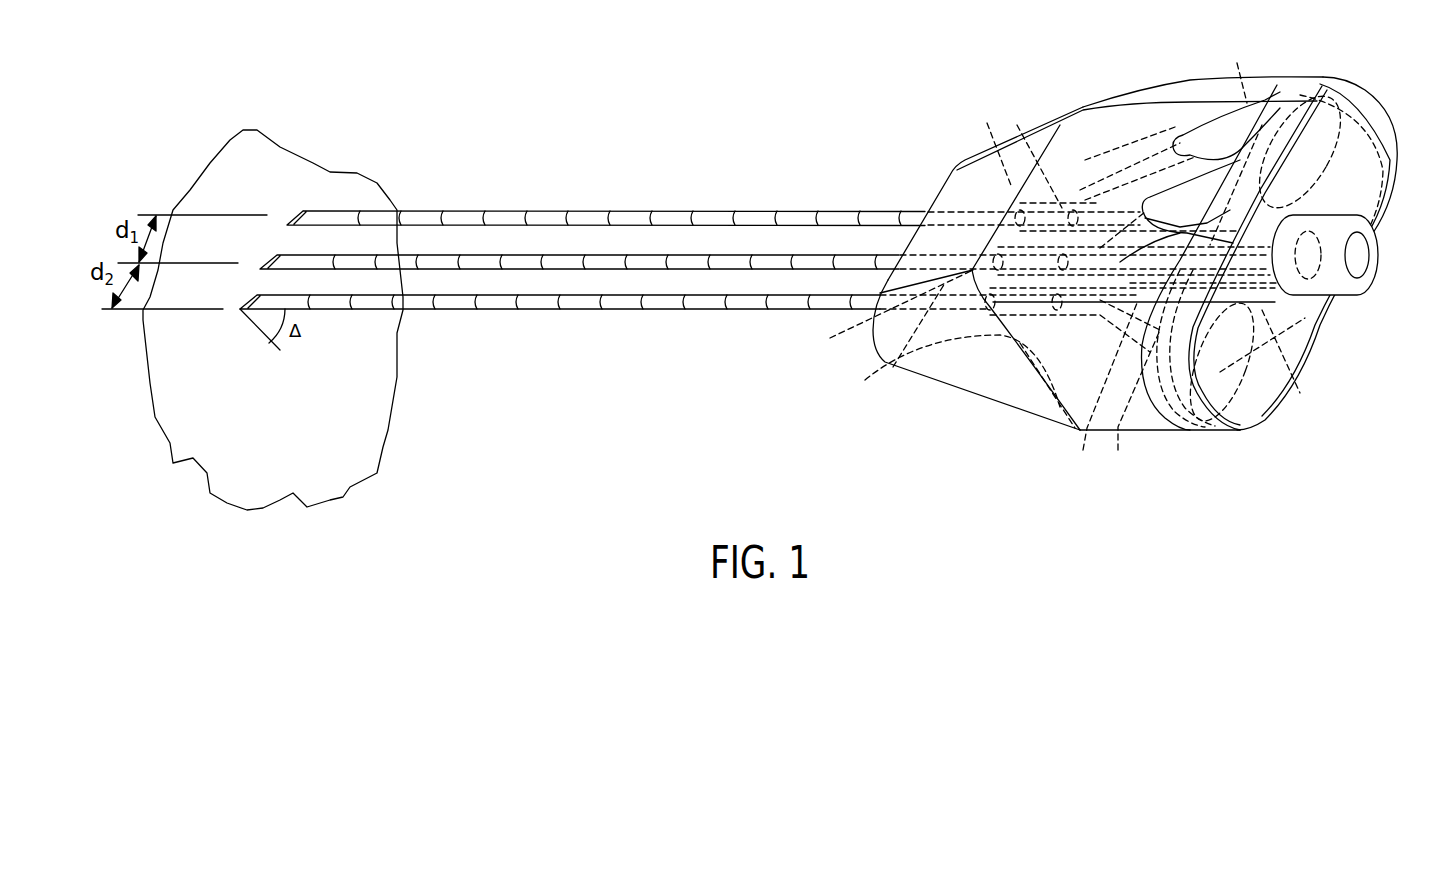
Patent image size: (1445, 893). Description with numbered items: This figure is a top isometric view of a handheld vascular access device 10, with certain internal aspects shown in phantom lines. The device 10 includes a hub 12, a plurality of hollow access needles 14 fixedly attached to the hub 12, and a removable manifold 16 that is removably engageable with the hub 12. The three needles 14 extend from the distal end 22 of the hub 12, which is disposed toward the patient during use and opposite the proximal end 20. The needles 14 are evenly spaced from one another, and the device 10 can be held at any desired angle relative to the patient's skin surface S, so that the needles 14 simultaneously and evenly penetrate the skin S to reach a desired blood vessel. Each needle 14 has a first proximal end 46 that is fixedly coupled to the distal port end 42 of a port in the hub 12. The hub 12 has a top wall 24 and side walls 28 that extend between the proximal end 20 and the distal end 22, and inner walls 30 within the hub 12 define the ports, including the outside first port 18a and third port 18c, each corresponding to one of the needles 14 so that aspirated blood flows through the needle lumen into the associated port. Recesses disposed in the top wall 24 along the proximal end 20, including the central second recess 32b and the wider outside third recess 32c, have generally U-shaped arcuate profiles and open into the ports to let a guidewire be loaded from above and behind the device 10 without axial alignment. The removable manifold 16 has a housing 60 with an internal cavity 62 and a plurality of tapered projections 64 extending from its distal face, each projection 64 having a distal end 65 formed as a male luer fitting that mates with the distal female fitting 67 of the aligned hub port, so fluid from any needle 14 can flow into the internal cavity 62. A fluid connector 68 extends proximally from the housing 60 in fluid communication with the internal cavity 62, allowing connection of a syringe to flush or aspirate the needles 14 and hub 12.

The handheld vascular access device 10 is at (944, 91).
The hub 12 is at (958, 370).
The hollow access needles 14 is at (390, 258).
The removable manifold 16 is at (1370, 83).
The first port 18a is at (1132, 403).
The third port 18c is at (1240, 71).
The proximal end 20 is at (1157, 423).
The distal end 22 is at (947, 177).
The top wall 24 is at (1067, 137).
The side walls 28 is at (1215, 87).
The inner wall 30 is at (1287, 390).
The second recess 32b is at (1157, 197).
The third recess 32c is at (1187, 140).
The distal port end 42 is at (950, 345).
The first proximal end 46 is at (889, 313).
The housing 60 is at (1320, 80).
The internal cavity 62 is at (1397, 157).
The projections 64 is at (1106, 389).
The distal end 65 is at (1035, 152).
The distal female fitting 67 is at (994, 142).
The fluid connector 68 is at (1375, 253).
The skin surface S is at (293, 480).